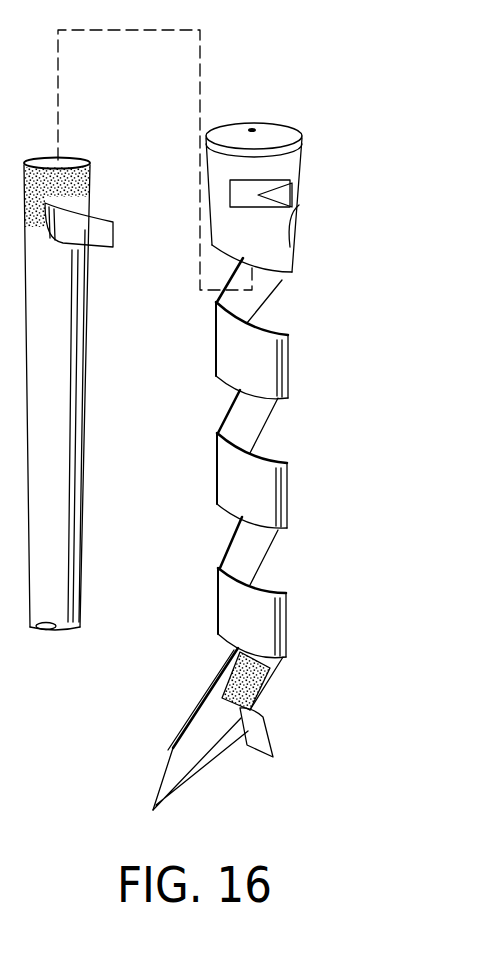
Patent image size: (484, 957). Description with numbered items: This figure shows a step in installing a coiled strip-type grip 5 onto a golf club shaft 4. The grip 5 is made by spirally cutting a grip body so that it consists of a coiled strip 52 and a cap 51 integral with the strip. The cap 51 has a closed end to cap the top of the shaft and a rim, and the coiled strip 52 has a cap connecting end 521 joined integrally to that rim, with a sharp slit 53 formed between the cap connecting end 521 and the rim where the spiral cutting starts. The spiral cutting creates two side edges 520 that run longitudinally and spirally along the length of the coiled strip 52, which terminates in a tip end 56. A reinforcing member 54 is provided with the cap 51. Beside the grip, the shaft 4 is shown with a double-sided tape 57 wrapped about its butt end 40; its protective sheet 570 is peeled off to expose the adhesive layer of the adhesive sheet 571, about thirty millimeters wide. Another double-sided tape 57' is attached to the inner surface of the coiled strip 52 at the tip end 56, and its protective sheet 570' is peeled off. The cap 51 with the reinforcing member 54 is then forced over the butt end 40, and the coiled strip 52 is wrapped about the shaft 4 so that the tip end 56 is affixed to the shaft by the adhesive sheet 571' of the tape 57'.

The golf club shaft 4 is at (58, 538).
The butt end 40 is at (62, 160).
The coiled strip-type grip 5 is at (196, 441).
The cap 51 is at (298, 155).
The cap connecting end 521 is at (238, 232).
The coiled strip 52 is at (296, 258).
The side edges 520 is at (280, 333).
The sharp slit 53 is at (291, 228).
The reinforcing member 54 is at (265, 195).
The tip end 56 is at (225, 690).
The double-sided tape 57 is at (109, 171).
The protective sheet 570 is at (98, 218).
The adhesive sheet 571 is at (87, 186).
The double-sided tape 57' is at (326, 704).
The protective sheet 570' is at (304, 732).
The adhesive sheet 571' is at (295, 681).